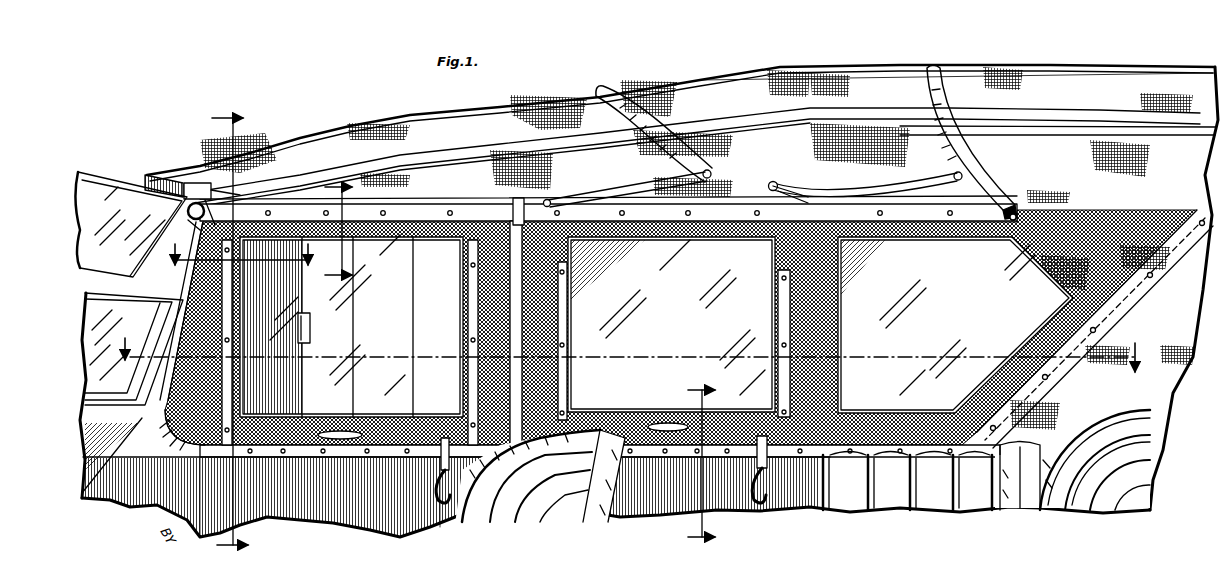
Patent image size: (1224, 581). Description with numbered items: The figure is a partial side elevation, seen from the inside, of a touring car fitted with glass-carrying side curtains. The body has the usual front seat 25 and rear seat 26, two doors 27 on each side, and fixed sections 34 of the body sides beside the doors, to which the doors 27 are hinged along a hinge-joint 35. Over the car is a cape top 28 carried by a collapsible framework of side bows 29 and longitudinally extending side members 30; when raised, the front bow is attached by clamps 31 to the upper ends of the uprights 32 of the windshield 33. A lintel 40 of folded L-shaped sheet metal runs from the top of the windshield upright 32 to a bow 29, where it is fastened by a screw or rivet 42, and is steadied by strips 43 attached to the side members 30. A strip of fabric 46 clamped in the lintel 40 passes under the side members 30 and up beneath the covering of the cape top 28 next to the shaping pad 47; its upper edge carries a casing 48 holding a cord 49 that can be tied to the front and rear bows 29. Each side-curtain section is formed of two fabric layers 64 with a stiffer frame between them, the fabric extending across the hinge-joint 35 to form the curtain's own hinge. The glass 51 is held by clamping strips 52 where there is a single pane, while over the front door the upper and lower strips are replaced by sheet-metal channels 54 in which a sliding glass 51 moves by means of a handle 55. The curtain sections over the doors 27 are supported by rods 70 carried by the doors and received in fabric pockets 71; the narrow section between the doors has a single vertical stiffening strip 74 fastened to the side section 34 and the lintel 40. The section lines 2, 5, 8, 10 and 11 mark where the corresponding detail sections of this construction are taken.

The section line 2— 2 is at (619, 349).
The section line 5— 5 is at (230, 332).
The section line 8— 8 is at (701, 467).
The section line 10— 10 is at (338, 232).
The section line 11— 11 is at (241, 255).
The front seat 25 is at (565, 500).
The rear seat 26 is at (1120, 507).
The door 27 is at (360, 527).
The cape top 28 is at (690, 80).
The side bow 29 is at (142, 178).
The longitudinally extending side member 30 is at (453, 198).
The clamp 31 is at (200, 185).
The upright 32 is at (177, 278).
The windshield 33 is at (97, 182).
The fixed section 34 is at (150, 508).
The hinge-joint 35 is at (200, 527).
The lintel 40 is at (733, 212).
The screw or rivet 42 is at (1017, 213).
The steadying strip 43 is at (547, 193).
The strip of fabric 46 is at (1087, 125).
The shaping pad 47 is at (715, 140).
The casing 48 is at (442, 150).
The cord 49 is at (1080, 155).
The glass 51 is at (413, 343).
The clamping strip 52 is at (997, 235).
The sheet-metal channel 54 is at (450, 242).
The handle 55 is at (310, 332).
The fabric layers 64 is at (1100, 210).
The rod 70 is at (127, 500).
The pocket 71 is at (222, 388).
The vertical stiffening strip 74 is at (570, 315).